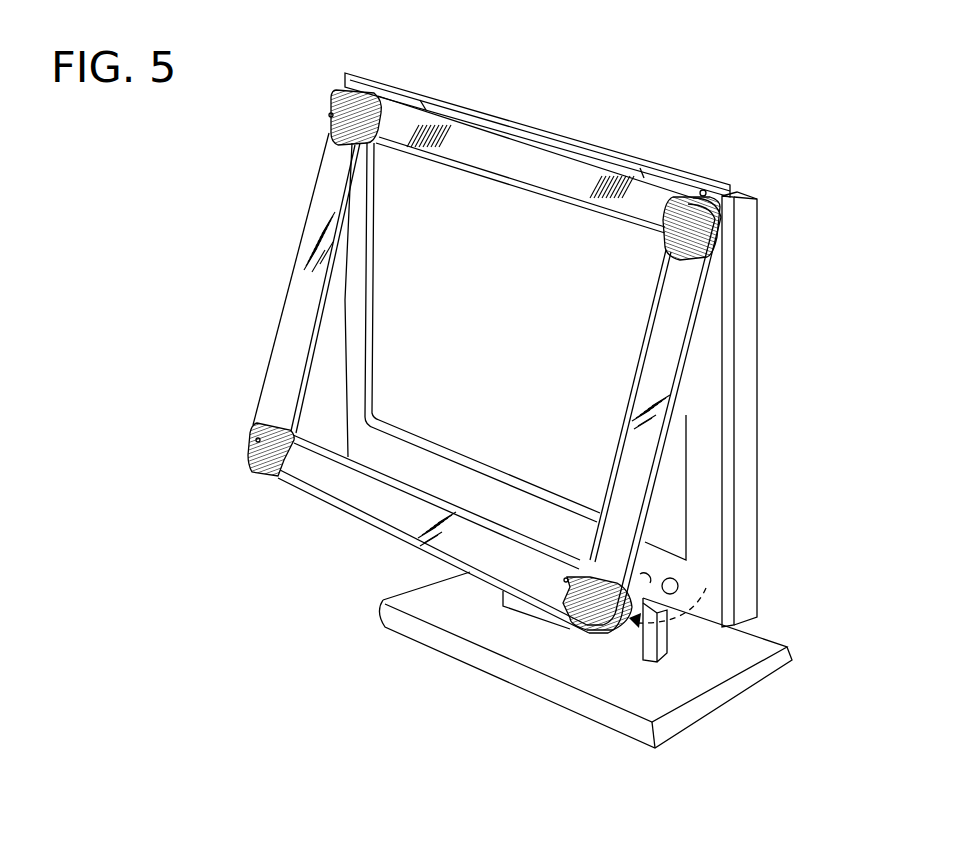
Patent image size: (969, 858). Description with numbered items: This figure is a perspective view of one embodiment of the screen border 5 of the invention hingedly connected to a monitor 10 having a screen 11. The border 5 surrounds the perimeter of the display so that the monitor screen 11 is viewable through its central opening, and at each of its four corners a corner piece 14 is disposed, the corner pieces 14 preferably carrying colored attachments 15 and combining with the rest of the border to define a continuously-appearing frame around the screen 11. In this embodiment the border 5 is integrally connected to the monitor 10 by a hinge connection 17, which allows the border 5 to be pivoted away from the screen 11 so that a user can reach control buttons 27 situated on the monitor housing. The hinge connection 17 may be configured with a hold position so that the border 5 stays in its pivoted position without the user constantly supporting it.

The screen border 5 is at (380, 542).
The monitor 10 is at (745, 412).
The screen 11 is at (393, 299).
The corner pieces 14 is at (337, 128).
The colored attachments 15 is at (345, 108).
The hinge connection 17 is at (570, 140).
The control buttons 27 is at (680, 582).